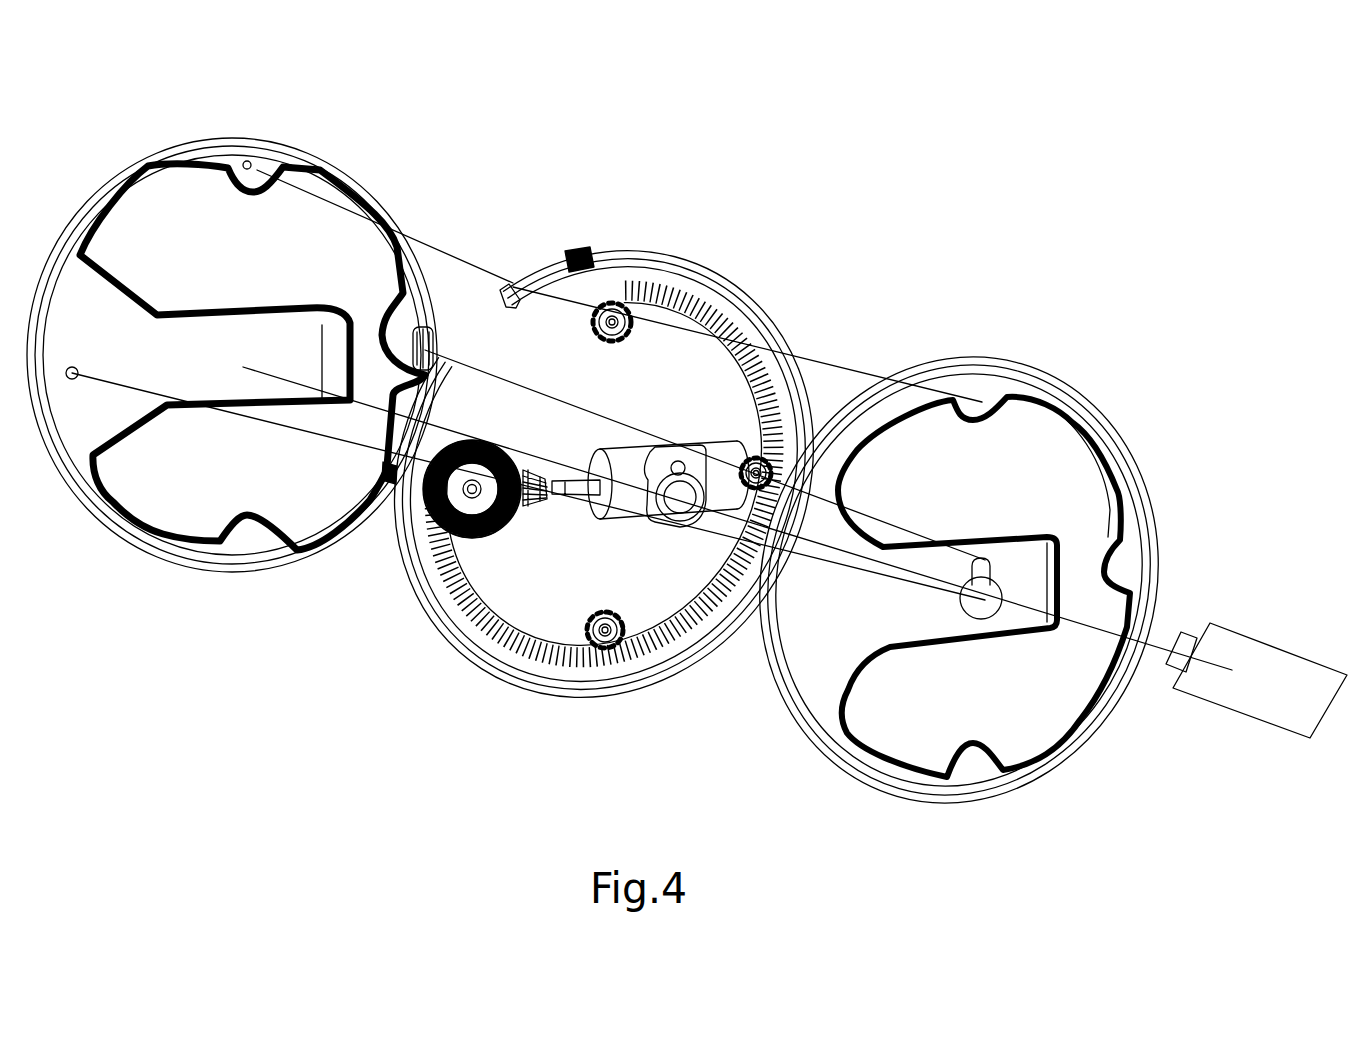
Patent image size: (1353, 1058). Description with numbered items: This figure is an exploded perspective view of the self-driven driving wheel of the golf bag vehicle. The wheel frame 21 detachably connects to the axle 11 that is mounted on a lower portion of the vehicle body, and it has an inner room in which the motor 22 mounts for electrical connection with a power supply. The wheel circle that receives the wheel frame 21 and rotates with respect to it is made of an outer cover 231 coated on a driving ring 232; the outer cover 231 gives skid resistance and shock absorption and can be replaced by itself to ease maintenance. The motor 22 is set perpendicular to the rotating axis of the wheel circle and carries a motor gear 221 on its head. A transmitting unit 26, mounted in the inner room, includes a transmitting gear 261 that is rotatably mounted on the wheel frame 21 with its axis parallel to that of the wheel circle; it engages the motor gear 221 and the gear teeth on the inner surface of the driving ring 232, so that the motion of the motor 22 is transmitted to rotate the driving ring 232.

The axle 11 is at (1236, 685).
The wheel frame 21 is at (250, 135).
The motor 22 is at (710, 460).
The motor gear 221 is at (537, 505).
The outer cover 231 is at (613, 257).
The driving ring 232 is at (537, 280).
The transmitting unit 26 is at (488, 576).
The transmitting gear 261 is at (436, 520).